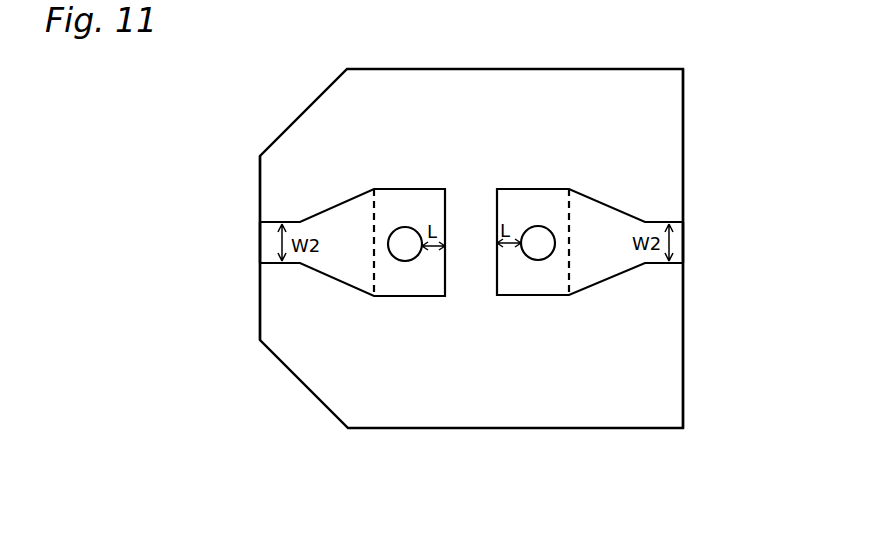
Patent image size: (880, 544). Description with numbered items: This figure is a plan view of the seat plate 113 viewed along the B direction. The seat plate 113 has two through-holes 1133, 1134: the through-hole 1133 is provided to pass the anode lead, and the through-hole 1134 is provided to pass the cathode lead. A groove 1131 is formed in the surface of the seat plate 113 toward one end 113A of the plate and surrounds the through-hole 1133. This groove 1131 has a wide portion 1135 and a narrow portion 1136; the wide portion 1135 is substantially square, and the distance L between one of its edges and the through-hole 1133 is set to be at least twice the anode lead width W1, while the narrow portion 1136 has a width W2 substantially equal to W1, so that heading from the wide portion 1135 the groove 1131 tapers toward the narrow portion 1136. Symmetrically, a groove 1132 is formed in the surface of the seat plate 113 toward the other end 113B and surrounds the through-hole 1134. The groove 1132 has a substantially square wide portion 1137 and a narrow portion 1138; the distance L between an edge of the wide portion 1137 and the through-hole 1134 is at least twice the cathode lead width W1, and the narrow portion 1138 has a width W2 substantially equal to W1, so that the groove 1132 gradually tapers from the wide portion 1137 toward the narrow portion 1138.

The seat plate 113 is at (483, 80).
The groove 1131 is at (325, 213).
The groove 1132 is at (618, 208).
The through-hole 1133 is at (407, 236).
The through-hole 1134 is at (533, 233).
The wide portion 1135 is at (388, 198).
The wide portion 1137 is at (555, 197).
The narrow portion 1136 is at (268, 243).
The narrow portion 1138 is at (683, 243).
The one end 113A is at (260, 297).
The other end 113B is at (683, 297).